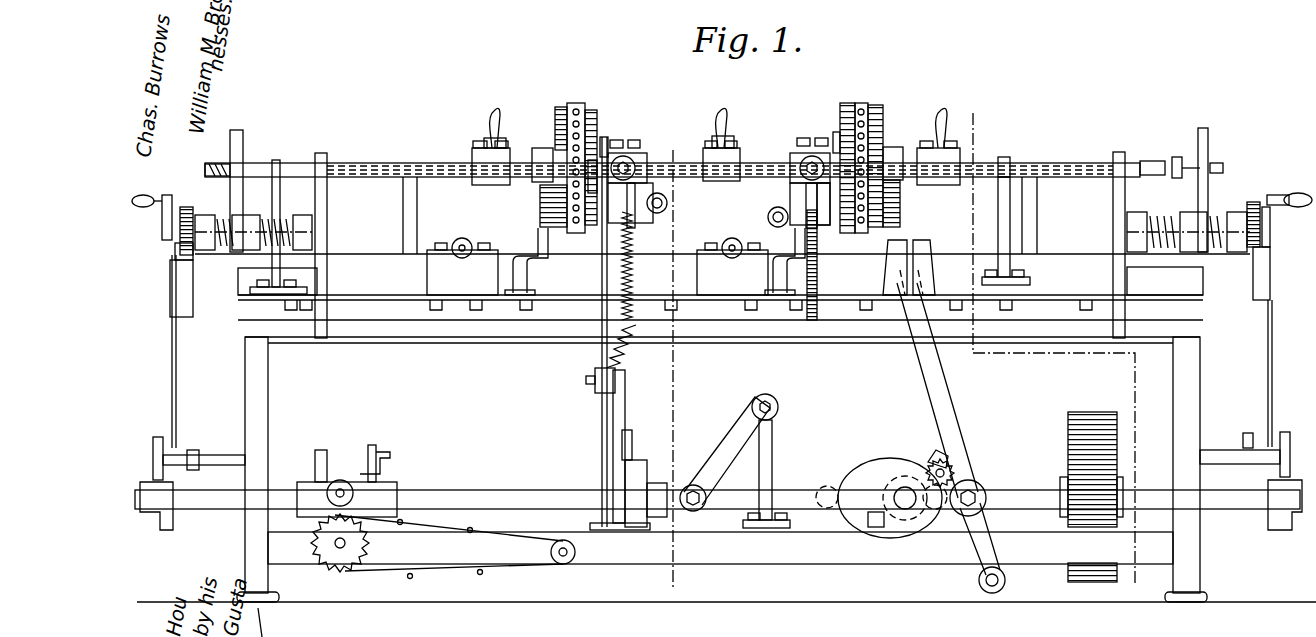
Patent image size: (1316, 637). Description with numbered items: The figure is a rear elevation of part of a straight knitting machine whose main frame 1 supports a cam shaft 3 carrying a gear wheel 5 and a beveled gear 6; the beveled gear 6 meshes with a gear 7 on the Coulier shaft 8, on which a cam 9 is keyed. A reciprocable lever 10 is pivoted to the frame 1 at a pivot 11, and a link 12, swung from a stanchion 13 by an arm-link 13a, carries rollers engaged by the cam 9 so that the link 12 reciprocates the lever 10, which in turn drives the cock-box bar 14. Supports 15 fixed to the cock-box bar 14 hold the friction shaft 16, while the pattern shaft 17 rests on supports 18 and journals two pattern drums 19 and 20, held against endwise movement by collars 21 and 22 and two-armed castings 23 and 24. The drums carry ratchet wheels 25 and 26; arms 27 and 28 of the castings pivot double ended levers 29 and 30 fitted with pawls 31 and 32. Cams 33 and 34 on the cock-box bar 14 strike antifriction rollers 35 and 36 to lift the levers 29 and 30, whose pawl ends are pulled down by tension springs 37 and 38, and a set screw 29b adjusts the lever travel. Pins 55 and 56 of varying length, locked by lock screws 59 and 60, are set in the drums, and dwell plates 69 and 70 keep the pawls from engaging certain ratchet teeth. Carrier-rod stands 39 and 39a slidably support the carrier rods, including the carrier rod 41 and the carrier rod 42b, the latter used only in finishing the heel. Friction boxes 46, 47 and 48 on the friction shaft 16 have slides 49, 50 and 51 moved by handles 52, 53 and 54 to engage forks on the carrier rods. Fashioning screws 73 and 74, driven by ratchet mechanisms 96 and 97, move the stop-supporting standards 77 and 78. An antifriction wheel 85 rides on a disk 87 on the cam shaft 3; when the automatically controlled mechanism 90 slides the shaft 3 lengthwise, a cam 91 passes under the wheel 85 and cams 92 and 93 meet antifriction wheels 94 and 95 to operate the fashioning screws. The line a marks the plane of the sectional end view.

The main frame 1 is at (268, 378).
The cam shaft 3 is at (1032, 490).
The gear wheel 5 is at (1102, 588).
The beveled gear 6 is at (938, 452).
The gear 7 is at (936, 464).
The Coulier shaft 8 is at (902, 516).
The cam 9 is at (879, 498).
The reciprocable lever 10 is at (953, 433).
The pivot 11 is at (1005, 578).
The link 12 is at (866, 500).
The stanchion 13 is at (772, 448).
The arm-link 13a is at (737, 437).
The cock-box bar 14 is at (848, 303).
The supports 15 is at (281, 197).
The friction shaft 16 is at (290, 160).
The pattern shaft 17 is at (434, 179).
The supports 18 is at (327, 155).
The pattern drum 19 is at (578, 103).
The pattern drum 20 is at (880, 105).
The collar 21 is at (540, 150).
The collar 22 is at (893, 148).
The two-armed casting 23 is at (640, 155).
The two-armed casting 24 is at (800, 150).
The ratchet wheel 25 is at (597, 112).
The ratchet wheel 26 is at (845, 103).
The arm 27 is at (653, 195).
The arm 28 is at (790, 172).
The double ended lever 29 is at (640, 177).
The set screw 29b is at (625, 160).
The double ended lever 30 is at (806, 190).
The pawl 31 is at (611, 137).
The pawl 32 is at (838, 190).
The cam 33 is at (512, 240).
The cam 34 is at (720, 230).
The antifriction roller 35 is at (668, 205).
The antifriction roller 36 is at (768, 217).
The tension spring 37 is at (620, 280).
The tension spring 38 is at (817, 278).
The carrier-rod stand 39 is at (403, 218).
The carrier-rod stand 39a is at (1037, 216).
The carrier rod 41 is at (1152, 160).
The carrier rod 42b is at (195, 162).
The friction box 46 is at (735, 155).
The friction box 47 is at (1003, 157).
The friction box 48 is at (472, 160).
The slide 49 is at (718, 146).
The slide 50 is at (945, 150).
The slide 51 is at (482, 146).
The handle 52 is at (725, 110).
The handle 53 is at (942, 112).
The handle 54 is at (493, 112).
The pins 55 is at (556, 110).
The pins 56 is at (900, 205).
The lock screw 59 is at (572, 105).
The lock screw 60 is at (862, 103).
The dwell plate 69 is at (600, 135).
The dwell plate 70 is at (832, 134).
The fashioning screw 73 is at (228, 220).
The fashioning screw 74 is at (1170, 215).
The standard 77 is at (243, 134).
The standard 78 is at (1203, 128).
The antifriction wheel 85 is at (632, 438).
The disk 87 is at (612, 462).
The automatically controlled mechanism 90 is at (436, 507).
The cam 91 is at (645, 470).
The cam 92 is at (165, 530).
The cam 93 is at (1293, 530).
The antifriction wheel 94 is at (158, 437).
The antifriction wheel 95 is at (1290, 455).
The ratchet mechanism 96 is at (162, 256).
The ratchet mechanism 97 is at (1279, 246).
The section line a is at (910, 343).